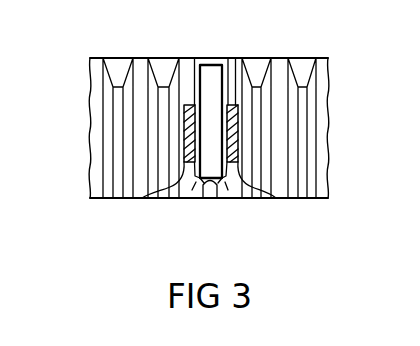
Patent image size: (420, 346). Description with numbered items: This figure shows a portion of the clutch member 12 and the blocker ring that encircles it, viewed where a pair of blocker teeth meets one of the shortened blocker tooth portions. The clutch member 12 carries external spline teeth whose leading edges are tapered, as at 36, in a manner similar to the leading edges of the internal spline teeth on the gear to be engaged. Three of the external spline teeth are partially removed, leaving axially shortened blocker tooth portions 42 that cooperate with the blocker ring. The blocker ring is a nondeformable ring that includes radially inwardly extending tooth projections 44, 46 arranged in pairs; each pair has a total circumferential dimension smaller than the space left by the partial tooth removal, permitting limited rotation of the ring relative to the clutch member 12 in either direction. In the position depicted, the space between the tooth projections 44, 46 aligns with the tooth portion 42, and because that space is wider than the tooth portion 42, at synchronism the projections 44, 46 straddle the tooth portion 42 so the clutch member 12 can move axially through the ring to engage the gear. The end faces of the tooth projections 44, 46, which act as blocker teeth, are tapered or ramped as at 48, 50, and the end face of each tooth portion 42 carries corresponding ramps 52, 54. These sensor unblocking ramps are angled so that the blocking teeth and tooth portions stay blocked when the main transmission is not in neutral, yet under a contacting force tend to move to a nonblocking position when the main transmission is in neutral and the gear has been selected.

The clutch member 12 is at (92, 186).
The taper 36 is at (258, 66).
The blocker tooth portion 42 is at (210, 190).
The tooth projection 44 is at (189, 105).
The tooth projection 46 is at (230, 105).
The ramp 48 is at (142, 198).
The ramp 50 is at (276, 198).
The ramp 52 is at (192, 190).
The ramp 54 is at (228, 190).